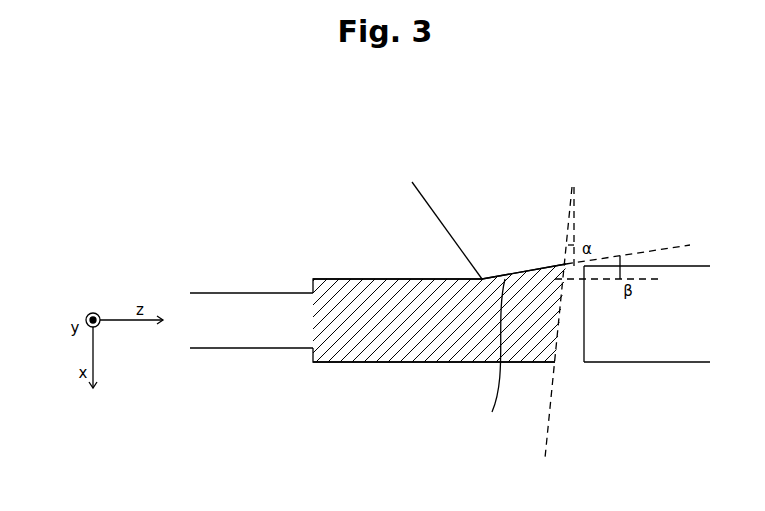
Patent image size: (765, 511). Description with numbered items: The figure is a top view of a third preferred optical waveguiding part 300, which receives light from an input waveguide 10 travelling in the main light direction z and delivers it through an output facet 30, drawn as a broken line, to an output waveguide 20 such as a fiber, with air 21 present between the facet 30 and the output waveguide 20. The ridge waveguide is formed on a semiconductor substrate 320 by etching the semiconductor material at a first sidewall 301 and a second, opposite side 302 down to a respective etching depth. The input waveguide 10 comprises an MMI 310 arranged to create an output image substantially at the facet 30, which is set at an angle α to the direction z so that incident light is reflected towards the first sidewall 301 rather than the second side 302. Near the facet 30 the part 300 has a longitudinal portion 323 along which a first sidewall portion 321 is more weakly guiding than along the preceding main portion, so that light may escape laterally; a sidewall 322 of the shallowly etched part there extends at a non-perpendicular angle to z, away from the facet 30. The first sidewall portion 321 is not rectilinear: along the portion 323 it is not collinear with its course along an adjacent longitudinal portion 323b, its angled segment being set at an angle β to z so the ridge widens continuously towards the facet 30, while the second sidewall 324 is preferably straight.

The input waveguide 10 is at (251, 320).
The output waveguide 20 is at (647, 314).
The air 21 is at (572, 350).
The output facet 30 is at (558, 225).
The optical waveguiding part 300 is at (287, 228).
The first sidewall 301 is at (360, 279).
The second side 302 is at (423, 363).
The MMI 310 is at (385, 317).
The semiconductor substrate 320 is at (436, 337).
The first sidewall portion 321 is at (485, 357).
The sidewall 322 is at (430, 205).
The longitudinal portion 323 is at (524, 288).
The longitudinal portion 323b is at (439, 302).
The second sidewall 324 is at (533, 363).